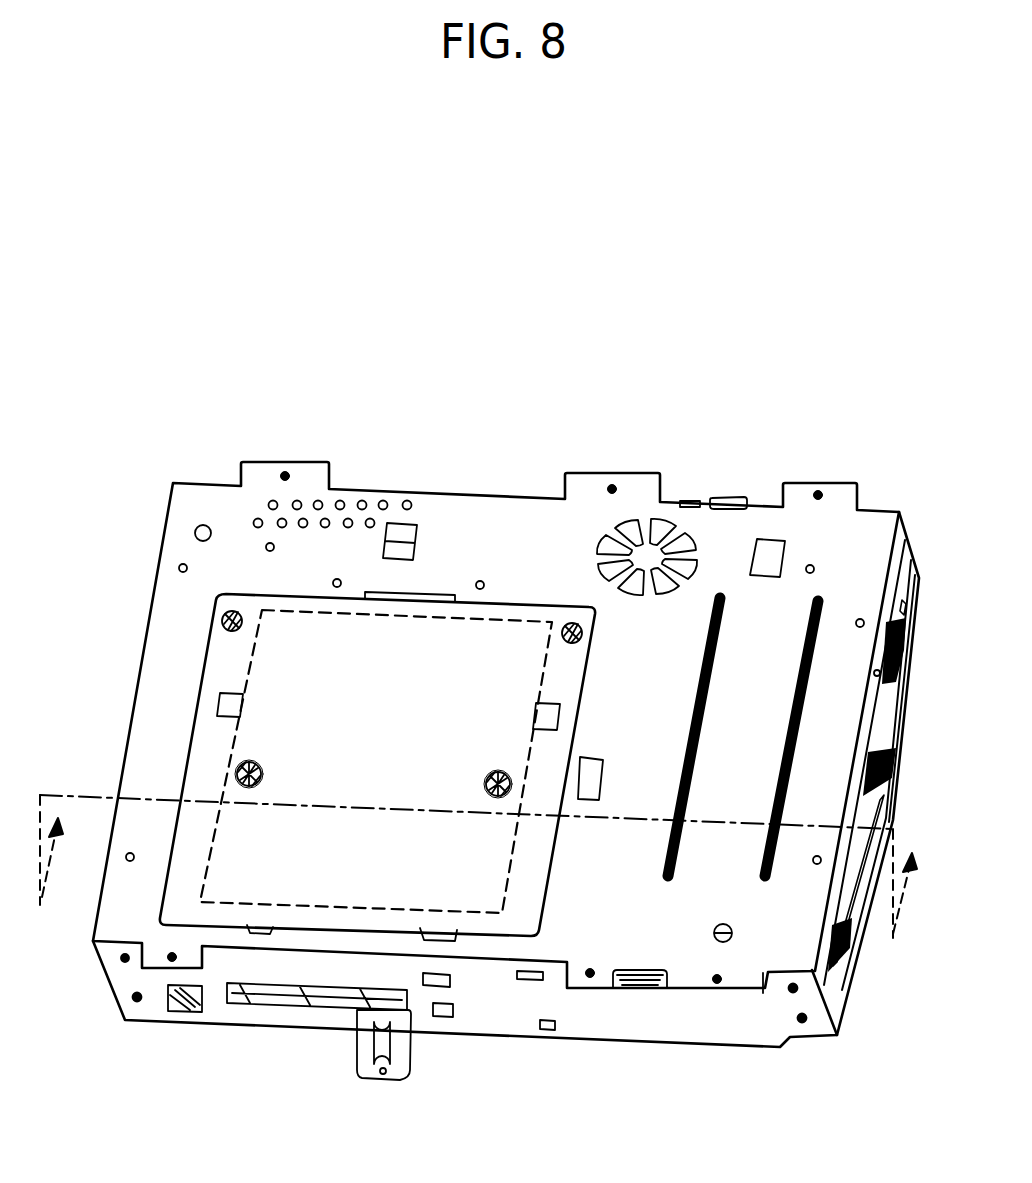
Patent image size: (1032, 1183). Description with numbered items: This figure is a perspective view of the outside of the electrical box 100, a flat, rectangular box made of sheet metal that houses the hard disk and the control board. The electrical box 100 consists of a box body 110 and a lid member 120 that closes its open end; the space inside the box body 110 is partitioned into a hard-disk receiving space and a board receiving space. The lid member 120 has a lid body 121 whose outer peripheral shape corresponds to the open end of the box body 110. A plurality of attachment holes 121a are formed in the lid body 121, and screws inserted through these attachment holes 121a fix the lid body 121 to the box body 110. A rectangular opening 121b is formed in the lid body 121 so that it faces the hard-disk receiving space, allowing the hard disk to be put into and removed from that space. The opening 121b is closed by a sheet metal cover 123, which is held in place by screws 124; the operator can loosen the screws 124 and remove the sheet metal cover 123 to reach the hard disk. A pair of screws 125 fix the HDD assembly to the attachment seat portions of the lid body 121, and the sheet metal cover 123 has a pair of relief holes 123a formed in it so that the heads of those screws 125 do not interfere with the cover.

The electrical box 100 is at (499, 1086).
The box body 110 is at (632, 1013).
The lid member 120 is at (648, 920).
The lid body 121 is at (782, 923).
The attachment holes 121a is at (284, 474).
The opening 121b is at (258, 637).
The sheet metal cover 123 is at (182, 903).
The relief holes 123a is at (489, 790).
The screws 124 is at (238, 616).
The screws 125 is at (489, 781).